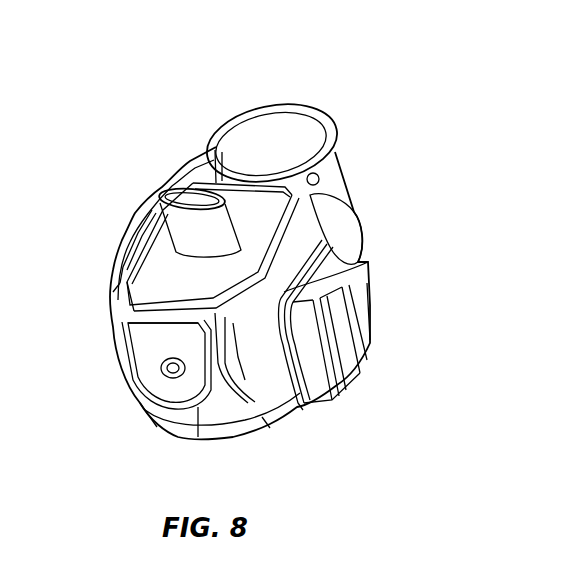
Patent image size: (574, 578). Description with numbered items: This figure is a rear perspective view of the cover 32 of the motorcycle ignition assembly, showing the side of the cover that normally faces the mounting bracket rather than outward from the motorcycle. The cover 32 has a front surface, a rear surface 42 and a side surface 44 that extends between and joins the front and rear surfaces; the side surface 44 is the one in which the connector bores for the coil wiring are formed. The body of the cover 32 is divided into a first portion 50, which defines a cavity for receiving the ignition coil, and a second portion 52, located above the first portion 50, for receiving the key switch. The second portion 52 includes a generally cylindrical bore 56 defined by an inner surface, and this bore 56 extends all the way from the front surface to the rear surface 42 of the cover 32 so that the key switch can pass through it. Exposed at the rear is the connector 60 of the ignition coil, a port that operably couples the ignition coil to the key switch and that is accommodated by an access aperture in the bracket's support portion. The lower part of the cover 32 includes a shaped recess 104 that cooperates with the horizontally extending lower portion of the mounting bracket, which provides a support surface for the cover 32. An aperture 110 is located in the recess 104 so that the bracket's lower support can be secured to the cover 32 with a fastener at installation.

The cover 32 is at (362, 378).
The rear surface 42 is at (138, 247).
The side surface 44 is at (323, 287).
The first portion 50 is at (83, 374).
The second portion 52 is at (333, 92).
The bore 56 is at (264, 138).
The connector 60 is at (190, 197).
The shaped recess 104 is at (165, 393).
The aperture 110 is at (184, 366).